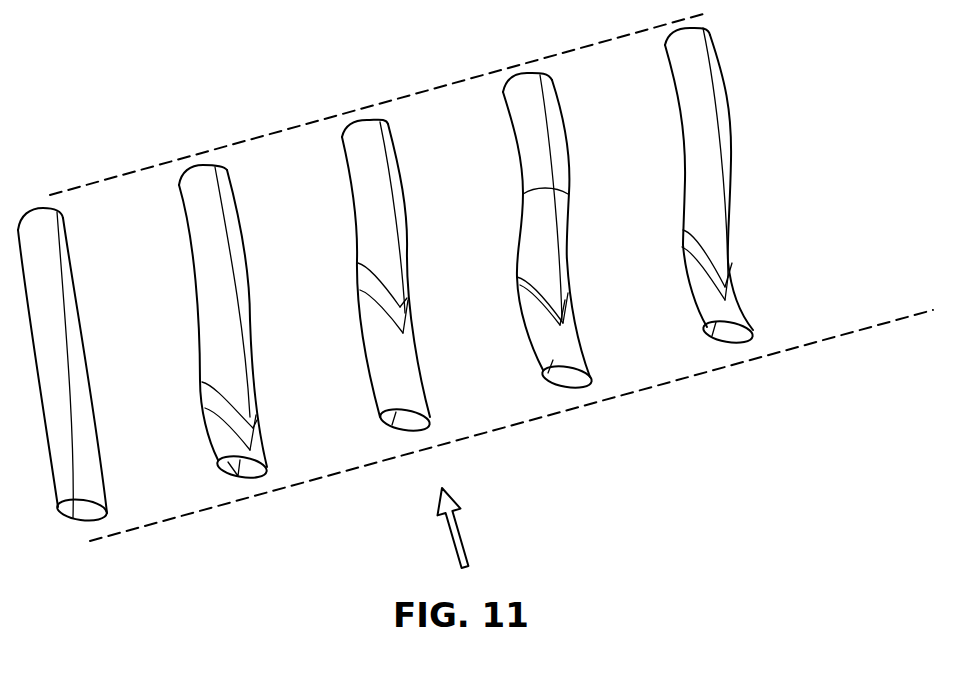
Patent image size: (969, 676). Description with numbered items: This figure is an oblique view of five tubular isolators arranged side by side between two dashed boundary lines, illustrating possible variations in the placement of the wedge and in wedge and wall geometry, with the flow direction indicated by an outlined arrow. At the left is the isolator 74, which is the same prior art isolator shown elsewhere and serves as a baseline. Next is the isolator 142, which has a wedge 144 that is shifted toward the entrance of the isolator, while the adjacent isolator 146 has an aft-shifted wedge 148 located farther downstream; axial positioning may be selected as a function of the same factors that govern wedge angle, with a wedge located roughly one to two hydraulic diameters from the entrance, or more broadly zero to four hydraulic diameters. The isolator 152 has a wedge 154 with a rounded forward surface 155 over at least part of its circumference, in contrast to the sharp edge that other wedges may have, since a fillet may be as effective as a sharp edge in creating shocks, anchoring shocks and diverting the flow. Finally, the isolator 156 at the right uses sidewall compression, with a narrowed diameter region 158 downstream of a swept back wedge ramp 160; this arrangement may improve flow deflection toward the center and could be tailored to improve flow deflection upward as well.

The isolator 74 is at (58, 282).
The isolator 142 is at (250, 257).
The wedge 144 is at (212, 395).
The isolator 146 is at (403, 215).
The aft-shifted wedge 148 is at (368, 281).
The isolator 152 is at (572, 167).
The wedge 154 is at (540, 295).
The rounded forward surface 155 is at (567, 307).
The isolator 156 is at (732, 122).
The narrowed diameter region 158 is at (683, 217).
The swept back wedge ramp 160 is at (713, 260).